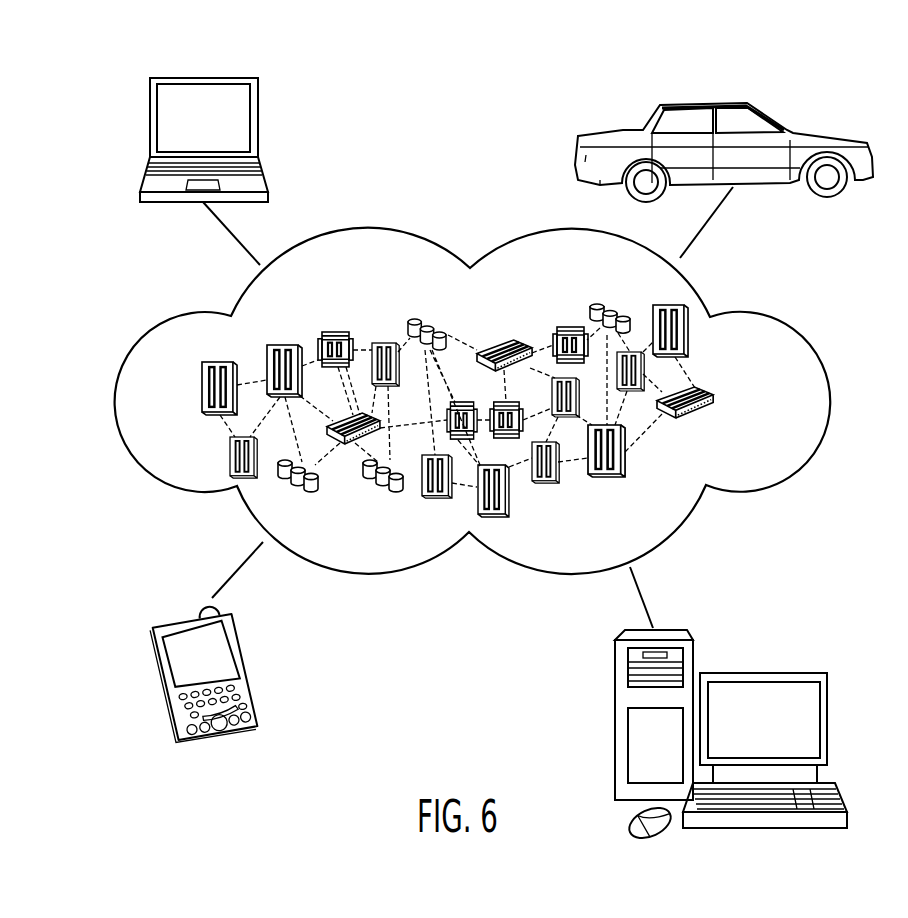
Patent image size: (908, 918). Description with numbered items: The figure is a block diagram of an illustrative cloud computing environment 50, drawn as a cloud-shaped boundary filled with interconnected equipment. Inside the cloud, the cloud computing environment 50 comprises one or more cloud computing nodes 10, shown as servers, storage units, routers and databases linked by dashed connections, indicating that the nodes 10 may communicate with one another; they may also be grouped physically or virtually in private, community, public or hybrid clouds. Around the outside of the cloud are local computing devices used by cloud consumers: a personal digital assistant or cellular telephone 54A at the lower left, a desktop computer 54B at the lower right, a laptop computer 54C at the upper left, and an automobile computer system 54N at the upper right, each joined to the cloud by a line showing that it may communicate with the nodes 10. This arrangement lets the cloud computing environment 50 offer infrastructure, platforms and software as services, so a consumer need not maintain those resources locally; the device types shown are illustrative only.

The cloud computing node 10 is at (718, 400).
The cloud computing environment 50 is at (778, 318).
The personal digital assistant or cellular telephone 54A is at (186, 615).
The desktop computer 54B is at (765, 672).
The laptop computer 54C is at (203, 77).
The automobile computer system 54N is at (705, 100).